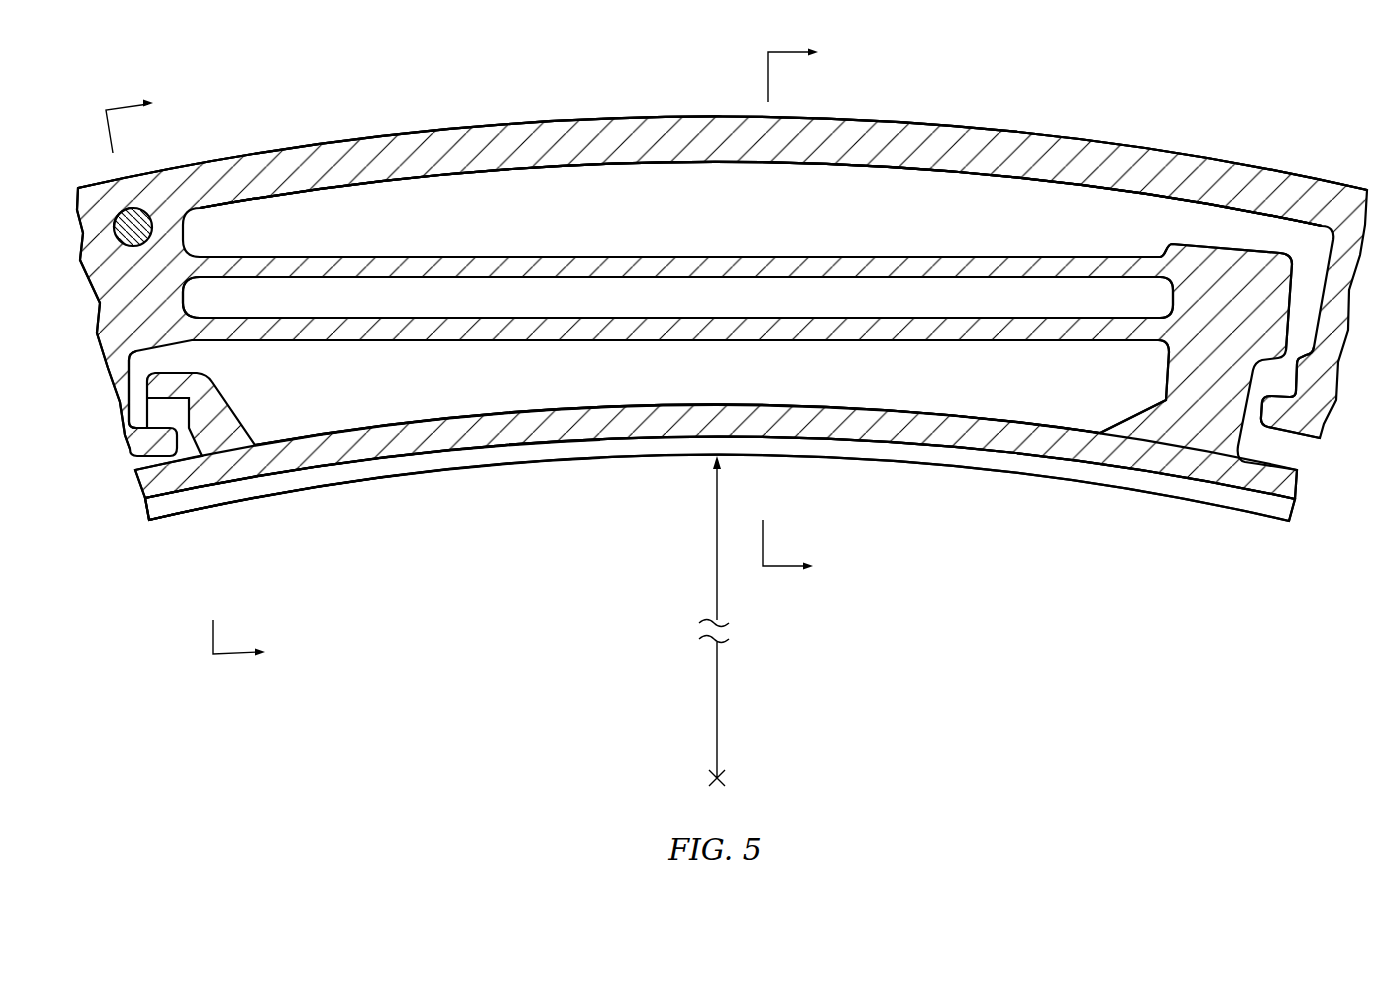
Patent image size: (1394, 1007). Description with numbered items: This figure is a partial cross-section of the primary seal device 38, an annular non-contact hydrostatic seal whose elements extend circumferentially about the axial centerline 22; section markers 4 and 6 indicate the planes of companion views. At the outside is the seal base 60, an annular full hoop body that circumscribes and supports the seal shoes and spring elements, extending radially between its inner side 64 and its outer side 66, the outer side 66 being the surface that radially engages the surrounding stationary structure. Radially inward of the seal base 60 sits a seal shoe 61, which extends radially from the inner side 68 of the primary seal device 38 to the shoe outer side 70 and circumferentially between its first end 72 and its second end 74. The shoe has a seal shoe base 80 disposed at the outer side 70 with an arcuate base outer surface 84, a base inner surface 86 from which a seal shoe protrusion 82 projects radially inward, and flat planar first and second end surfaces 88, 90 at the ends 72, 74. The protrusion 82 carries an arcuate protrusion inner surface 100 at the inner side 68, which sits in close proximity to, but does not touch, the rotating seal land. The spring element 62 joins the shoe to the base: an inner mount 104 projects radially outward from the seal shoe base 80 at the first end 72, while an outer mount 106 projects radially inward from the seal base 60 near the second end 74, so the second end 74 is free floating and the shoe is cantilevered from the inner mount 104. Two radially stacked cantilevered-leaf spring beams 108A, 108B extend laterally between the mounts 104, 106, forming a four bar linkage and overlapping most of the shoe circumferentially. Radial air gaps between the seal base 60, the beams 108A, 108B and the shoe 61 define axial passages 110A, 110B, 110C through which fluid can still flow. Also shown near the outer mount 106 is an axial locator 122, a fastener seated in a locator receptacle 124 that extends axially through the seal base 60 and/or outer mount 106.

The section line 4- 4 is at (800, 310).
The section line 6- 6 is at (197, 375).
The axial centerline 22 is at (720, 778).
The primary seal device 38 is at (1207, 132).
The seal base 60 is at (272, 146).
The seal shoe 61 is at (180, 523).
The spring element 62 is at (372, 246).
The inner side of the seal base 64 is at (630, 163).
The outer side of the seal base 66 is at (588, 118).
The inner side of the primary seal device 68 is at (424, 480).
The outer side of the seal shoe 70 is at (677, 415).
The first end of the seal shoe 72 is at (1294, 527).
The second end of the seal shoe 74 is at (124, 523).
The seal shoe base 80 is at (294, 432).
The seal shoe protrusion 82 is at (345, 490).
The base outer surface 84 is at (487, 416).
The base inner surface 86 is at (232, 482).
The first end surface 88 is at (1300, 490).
The second end surface 90 is at (136, 489).
The protrusion inner surface 100 is at (520, 462).
The inner mount 104 is at (1299, 350).
The outer mount 106 is at (128, 297).
The spring beam 108A is at (820, 256).
The spring beam 108B is at (799, 341).
The passage 110A is at (677, 221).
The passage 110B is at (658, 304).
The passage 110C is at (665, 378).
The primary seal device axial locator 122 is at (146, 202).
The locator receptacle 124 is at (104, 234).